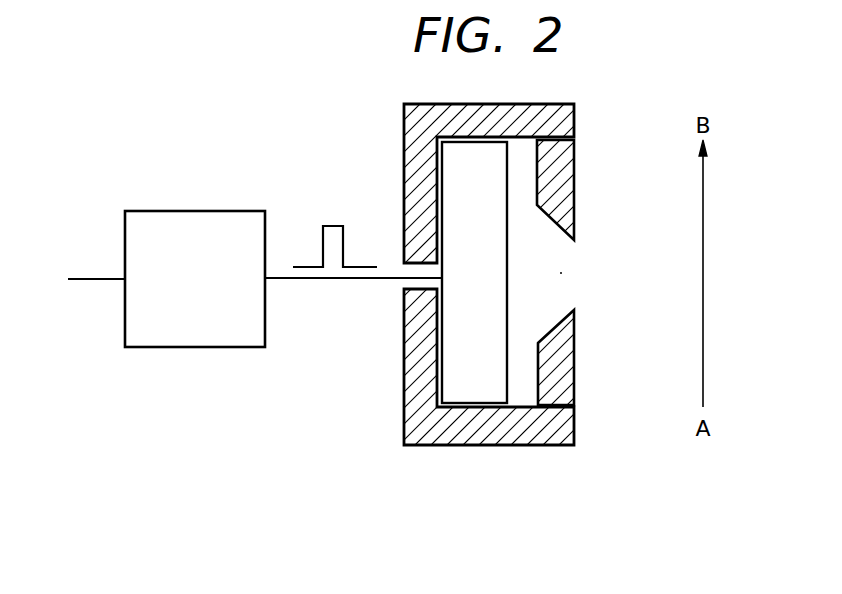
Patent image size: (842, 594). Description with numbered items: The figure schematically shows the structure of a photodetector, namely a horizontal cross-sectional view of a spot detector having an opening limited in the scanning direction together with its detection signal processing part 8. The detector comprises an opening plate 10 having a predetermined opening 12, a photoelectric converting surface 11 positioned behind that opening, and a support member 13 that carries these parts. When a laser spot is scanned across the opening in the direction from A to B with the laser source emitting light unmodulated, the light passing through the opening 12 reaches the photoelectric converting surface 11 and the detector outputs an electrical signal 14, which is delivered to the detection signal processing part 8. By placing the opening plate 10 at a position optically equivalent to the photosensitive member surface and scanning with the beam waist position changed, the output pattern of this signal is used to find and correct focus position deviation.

The detection signal processing part 8 is at (220, 222).
The electrical signal 14 is at (332, 222).
The opening plate 10 is at (421, 297).
The photoelectric converting surface 11 is at (508, 380).
The opening 12 is at (560, 273).
The support member 13 is at (435, 435).